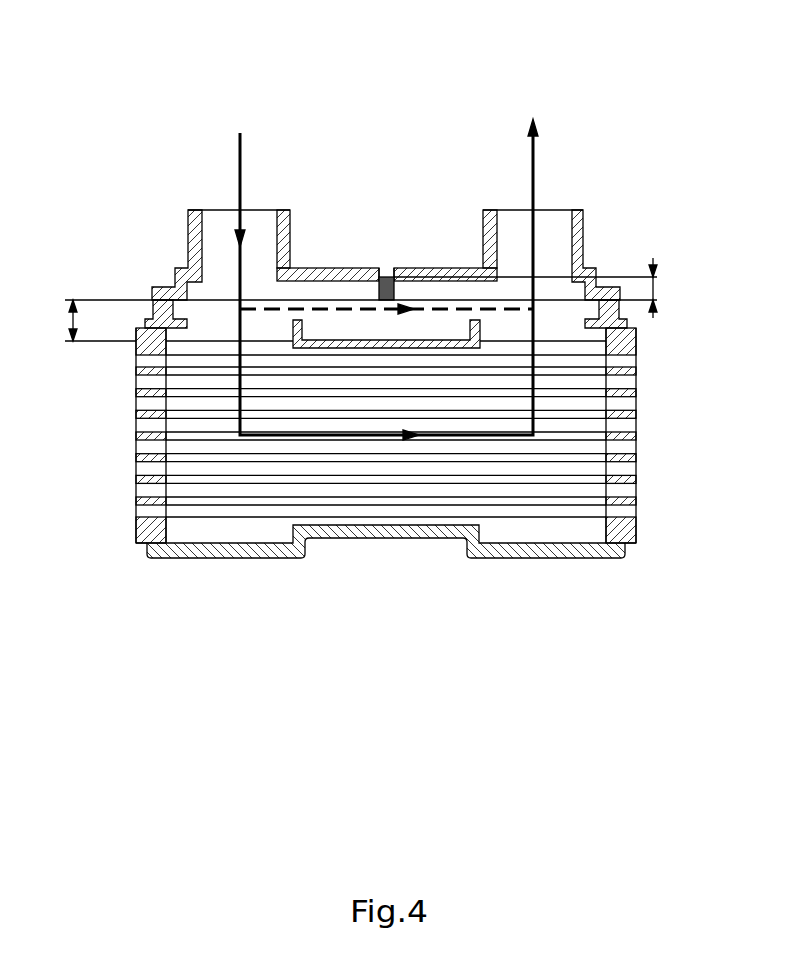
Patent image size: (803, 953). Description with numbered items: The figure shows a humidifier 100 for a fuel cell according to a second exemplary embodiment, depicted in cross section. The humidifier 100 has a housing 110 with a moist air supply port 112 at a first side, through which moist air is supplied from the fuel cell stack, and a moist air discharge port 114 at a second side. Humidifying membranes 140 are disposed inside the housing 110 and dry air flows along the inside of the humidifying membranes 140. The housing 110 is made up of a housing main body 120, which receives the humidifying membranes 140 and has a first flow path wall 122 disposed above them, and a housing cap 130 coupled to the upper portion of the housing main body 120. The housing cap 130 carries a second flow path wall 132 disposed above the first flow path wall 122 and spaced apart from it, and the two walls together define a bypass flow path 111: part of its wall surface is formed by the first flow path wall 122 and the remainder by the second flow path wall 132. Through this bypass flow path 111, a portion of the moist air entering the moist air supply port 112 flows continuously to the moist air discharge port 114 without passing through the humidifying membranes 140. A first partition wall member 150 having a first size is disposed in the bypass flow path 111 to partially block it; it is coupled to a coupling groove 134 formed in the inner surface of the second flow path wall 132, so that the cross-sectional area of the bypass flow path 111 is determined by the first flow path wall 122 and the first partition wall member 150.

The humidifier for a fuel cell 100 is at (206, 27).
The housing 110 is at (606, 270).
The bypass flow path 111 is at (387, 323).
The moist air supply port 112 is at (264, 210).
The moist air discharge port 114 is at (560, 210).
The housing main body 120 is at (628, 326).
The first flow path wall 122 is at (367, 345).
The housing cap 130 is at (578, 246).
The second flow path wall 132 is at (435, 271).
The coupling groove 134 is at (381, 297).
The humidifying membranes 140 is at (198, 358).
The first partition wall member 150 is at (379, 288).